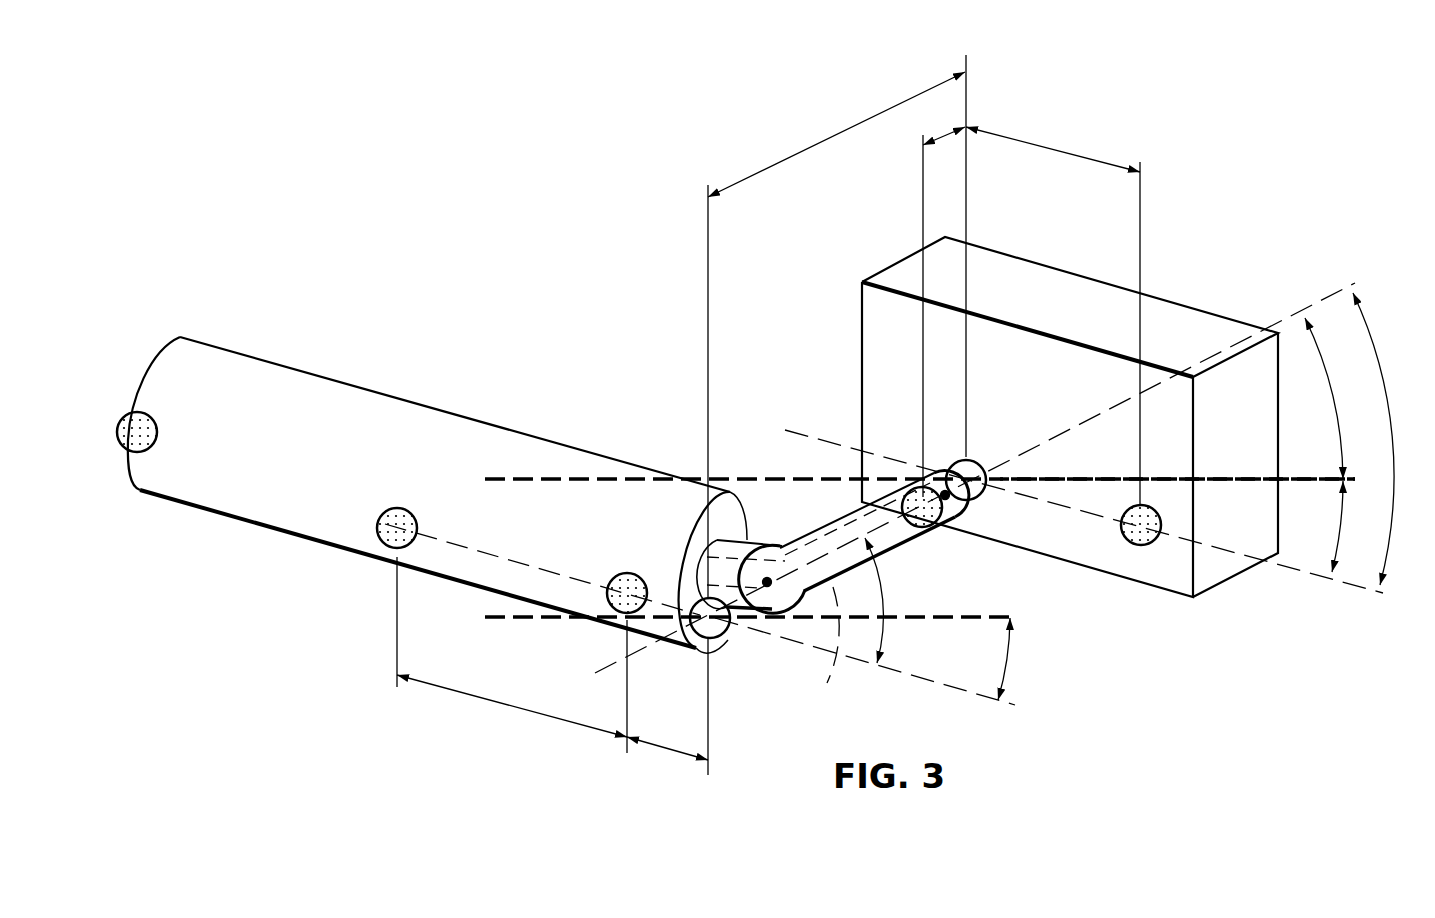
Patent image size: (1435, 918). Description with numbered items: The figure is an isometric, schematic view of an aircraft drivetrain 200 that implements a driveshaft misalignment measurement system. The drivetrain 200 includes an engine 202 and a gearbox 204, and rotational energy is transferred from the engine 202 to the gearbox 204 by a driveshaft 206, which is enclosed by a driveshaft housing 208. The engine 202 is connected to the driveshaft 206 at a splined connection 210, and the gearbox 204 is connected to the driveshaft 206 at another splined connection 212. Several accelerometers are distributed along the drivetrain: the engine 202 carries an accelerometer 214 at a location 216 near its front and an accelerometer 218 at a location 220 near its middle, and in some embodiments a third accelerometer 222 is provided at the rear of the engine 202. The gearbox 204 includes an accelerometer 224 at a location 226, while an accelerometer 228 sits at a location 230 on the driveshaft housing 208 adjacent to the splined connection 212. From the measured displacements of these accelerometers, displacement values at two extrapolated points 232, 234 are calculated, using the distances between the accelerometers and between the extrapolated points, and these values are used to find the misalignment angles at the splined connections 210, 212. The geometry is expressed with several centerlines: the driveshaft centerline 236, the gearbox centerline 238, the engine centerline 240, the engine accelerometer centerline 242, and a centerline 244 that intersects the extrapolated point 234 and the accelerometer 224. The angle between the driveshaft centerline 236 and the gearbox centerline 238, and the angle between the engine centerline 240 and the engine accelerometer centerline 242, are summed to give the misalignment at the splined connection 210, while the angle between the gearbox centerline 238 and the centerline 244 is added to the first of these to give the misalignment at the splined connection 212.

The drivetrain 200 is at (592, 228).
The engine 202 is at (478, 392).
The gearbox 204 is at (1185, 318).
The driveshaft 206 is at (865, 653).
The driveshaft housing 208 is at (855, 505).
The splined connection 210 is at (768, 575).
The splined connection 212 is at (963, 517).
The accelerometer 214 is at (612, 577).
The location 216 is at (628, 687).
The accelerometer 218 is at (378, 520).
The location 220 is at (397, 620).
The third accelerometer 222 is at (157, 433).
The accelerometer 224 is at (1158, 545).
The location 226 is at (1140, 212).
The accelerometer 228 is at (890, 483).
The location 230 is at (923, 188).
The extrapolated point 232 is at (697, 597).
The extrapolated point 234 is at (972, 458).
The driveshaft centerline 236 is at (1083, 420).
The gearbox centerline 238 is at (1213, 478).
The engine centerline 240 is at (497, 618).
The engine accelerometer centerline 242 is at (485, 553).
The centerline 244 is at (1298, 572).